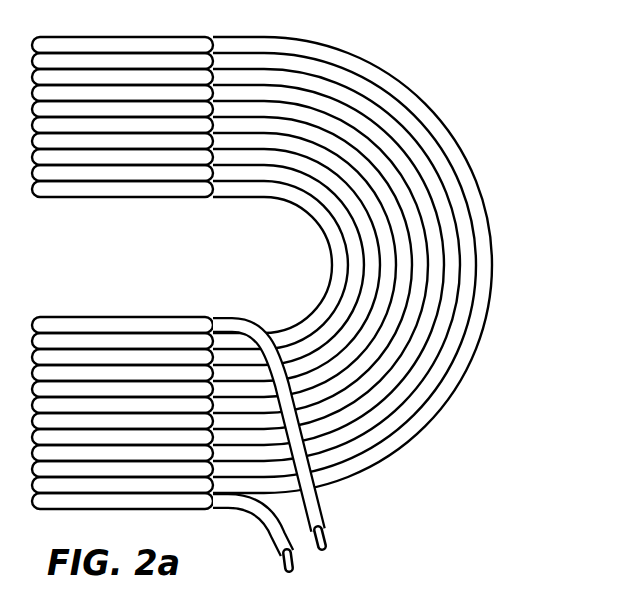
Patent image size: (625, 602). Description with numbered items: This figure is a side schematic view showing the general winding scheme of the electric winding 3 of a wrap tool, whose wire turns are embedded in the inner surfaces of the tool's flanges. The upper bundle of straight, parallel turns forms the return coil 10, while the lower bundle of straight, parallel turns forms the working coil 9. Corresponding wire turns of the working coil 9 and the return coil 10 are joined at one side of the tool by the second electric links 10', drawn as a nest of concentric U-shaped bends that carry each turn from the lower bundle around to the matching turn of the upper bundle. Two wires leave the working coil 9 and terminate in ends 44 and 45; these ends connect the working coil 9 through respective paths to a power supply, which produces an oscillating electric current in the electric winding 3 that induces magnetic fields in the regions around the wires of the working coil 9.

The electric winding 3 is at (278, 259).
The return coil 10 is at (122, 143).
The working coil 9 is at (153, 317).
The second electric links 10' is at (368, 265).
The end 44 is at (324, 508).
The end 45 is at (264, 531).